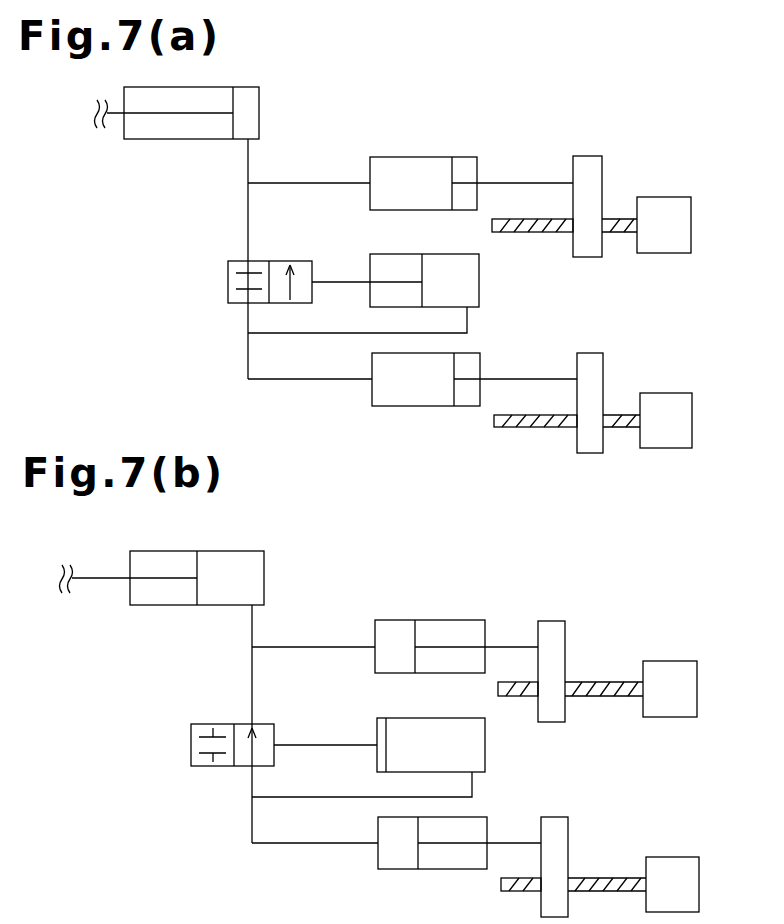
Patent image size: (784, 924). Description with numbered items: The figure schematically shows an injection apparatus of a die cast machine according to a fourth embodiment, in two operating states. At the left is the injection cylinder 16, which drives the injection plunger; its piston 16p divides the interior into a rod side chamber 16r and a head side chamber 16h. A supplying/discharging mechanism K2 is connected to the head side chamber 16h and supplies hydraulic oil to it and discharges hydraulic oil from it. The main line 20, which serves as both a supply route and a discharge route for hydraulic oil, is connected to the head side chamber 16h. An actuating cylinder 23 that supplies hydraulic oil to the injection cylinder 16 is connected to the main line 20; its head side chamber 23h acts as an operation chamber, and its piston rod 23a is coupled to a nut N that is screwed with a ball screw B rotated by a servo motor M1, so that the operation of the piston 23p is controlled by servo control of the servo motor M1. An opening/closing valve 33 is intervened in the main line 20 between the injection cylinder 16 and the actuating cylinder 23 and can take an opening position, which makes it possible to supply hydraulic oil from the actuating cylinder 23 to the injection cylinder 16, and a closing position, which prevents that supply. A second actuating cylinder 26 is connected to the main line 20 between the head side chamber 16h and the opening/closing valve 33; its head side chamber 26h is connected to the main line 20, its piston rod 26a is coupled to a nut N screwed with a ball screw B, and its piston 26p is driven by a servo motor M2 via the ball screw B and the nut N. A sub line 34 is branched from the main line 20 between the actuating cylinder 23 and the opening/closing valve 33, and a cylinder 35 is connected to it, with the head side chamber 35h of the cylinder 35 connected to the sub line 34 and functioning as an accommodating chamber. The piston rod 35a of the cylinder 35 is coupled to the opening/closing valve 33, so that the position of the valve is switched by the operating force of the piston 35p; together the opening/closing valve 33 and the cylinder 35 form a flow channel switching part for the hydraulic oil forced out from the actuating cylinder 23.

In FIG. 7A, the injection cylinder 16 is at (213, 135).
In FIG. 7B, the injection cylinder 16 is at (198, 578).
In FIG. 7A, the head side chamber 16h is at (249, 109).
In FIG. 7B, the head side chamber 16h is at (255, 575).
In FIG. 7A, the piston 16p is at (239, 124).
In FIG. 7B, the piston 16p is at (197, 568).
In FIG. 7A, the rod side chamber 16r is at (161, 145).
In FIG. 7B, the rod side chamber 16r is at (168, 606).
In FIG. 7A, the main line 20 is at (248, 350).
In FIG. 7B, the main line 20 is at (252, 815).
In FIG. 7A, the actuating cylinder 23 is at (432, 400).
In FIG. 7B, the actuating cylinder 23 is at (434, 865).
In FIG. 7A, the piston rod 23a is at (528, 379).
In FIG. 7B, the piston rod 23a is at (525, 843).
In FIG. 7A, the head side chamber 23h is at (393, 406).
In FIG. 7B, the head side chamber 23h is at (398, 869).
In FIG. 7A, the piston 23p is at (463, 395).
In FIG. 7B, the piston 23p is at (425, 869).
In FIG. 7A, the actuating cylinder 26 is at (431, 161).
In FIG. 7B, the actuating cylinder 26 is at (434, 624).
In FIG. 7A, the piston rod 26a is at (528, 183).
In FIG. 7B, the piston rod 26a is at (522, 647).
In FIG. 7A, the head side chamber 26h is at (392, 165).
In FIG. 7B, the head side chamber 26h is at (395, 628).
In FIG. 7A, the piston 26p is at (458, 167).
In FIG. 7B, the piston 26p is at (418, 633).
In FIG. 7A, the opening/closing valve 33 is at (228, 282).
In FIG. 7B, the opening/closing valve 33 is at (191, 745).
In FIG. 7A, the sub line 34 is at (320, 333).
In FIG. 7B, the sub line 34 is at (328, 797).
In FIG. 7A, the cylinder 35 is at (460, 261).
In FIG. 7B, the cylinder 35 is at (466, 724).
In FIG. 7A, the piston rod 35a is at (343, 282).
In FIG. 7B, the piston rod 35a is at (352, 745).
In FIG. 7A, the head side chamber 35h is at (470, 282).
In FIG. 7B, the head side chamber 35h is at (478, 745).
In FIG. 7A, the piston 35p is at (418, 272).
In FIG. 7B, the piston 35p is at (388, 735).
In FIG. 7A, the ball screw B is at (517, 219).
In FIG. 7B, the ball screw B is at (590, 682).
In FIG. 7A, the nut N is at (603, 172).
In FIG. 7B, the nut N is at (566, 638).
In FIG. 7A, the servo motor M1 is at (663, 393).
In FIG. 7B, the servo motor M1 is at (670, 857).
In FIG. 7A, the servo motor M2 is at (660, 197).
In FIG. 7B, the servo motor M2 is at (668, 661).
In FIG. 7A, the supplying/discharging mechanism K2 is at (555, 108).
In FIG. 7B, the supplying/discharging mechanism K2 is at (560, 576).